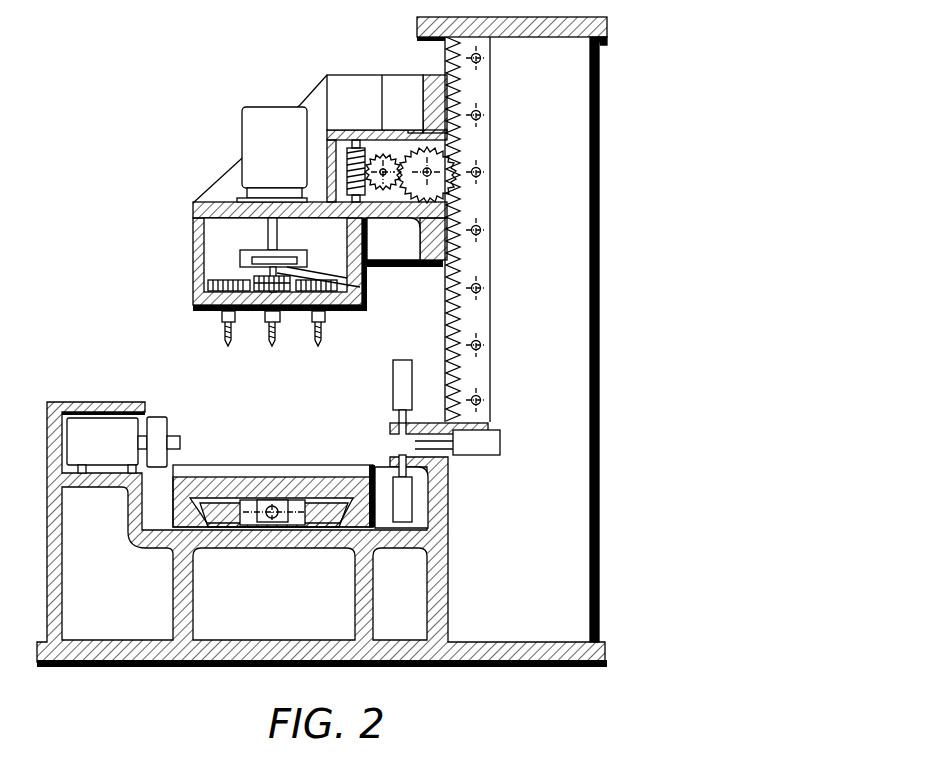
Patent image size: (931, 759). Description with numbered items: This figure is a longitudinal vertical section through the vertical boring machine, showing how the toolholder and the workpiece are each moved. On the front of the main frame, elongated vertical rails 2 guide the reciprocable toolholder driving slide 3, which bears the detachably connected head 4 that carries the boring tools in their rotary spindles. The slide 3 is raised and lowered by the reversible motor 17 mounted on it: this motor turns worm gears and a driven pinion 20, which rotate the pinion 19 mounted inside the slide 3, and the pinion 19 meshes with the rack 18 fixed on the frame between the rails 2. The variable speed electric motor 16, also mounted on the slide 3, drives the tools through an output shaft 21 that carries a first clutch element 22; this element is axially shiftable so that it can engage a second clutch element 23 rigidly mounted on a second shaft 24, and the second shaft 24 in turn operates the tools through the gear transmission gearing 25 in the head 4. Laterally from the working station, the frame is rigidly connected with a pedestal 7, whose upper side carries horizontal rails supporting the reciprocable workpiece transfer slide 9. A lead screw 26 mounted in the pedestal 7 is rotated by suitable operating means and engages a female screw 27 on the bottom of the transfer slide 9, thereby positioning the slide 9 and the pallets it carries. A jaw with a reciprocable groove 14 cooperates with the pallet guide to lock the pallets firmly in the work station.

The rails 2 is at (442, 330).
The toolholder driving slide 3 is at (425, 80).
The head 4 is at (197, 292).
The pedestal 7 is at (193, 590).
The workpiece transfer slide 9 is at (308, 467).
The reciprocable groove 14 is at (400, 447).
The variable speed electric motor 16 is at (252, 107).
The reversible motor 17 is at (355, 75).
The rack 18 is at (468, 144).
The pinion 19 is at (457, 160).
The driven pinion 20 is at (375, 158).
The output shaft 21 is at (267, 232).
The first clutch element 22 is at (243, 253).
The second clutch element 23 is at (365, 279).
The second shaft 24 is at (365, 291).
The gear transmission gearing 25 is at (205, 307).
The lead screw 26 is at (275, 518).
The female screw 27 is at (264, 503).